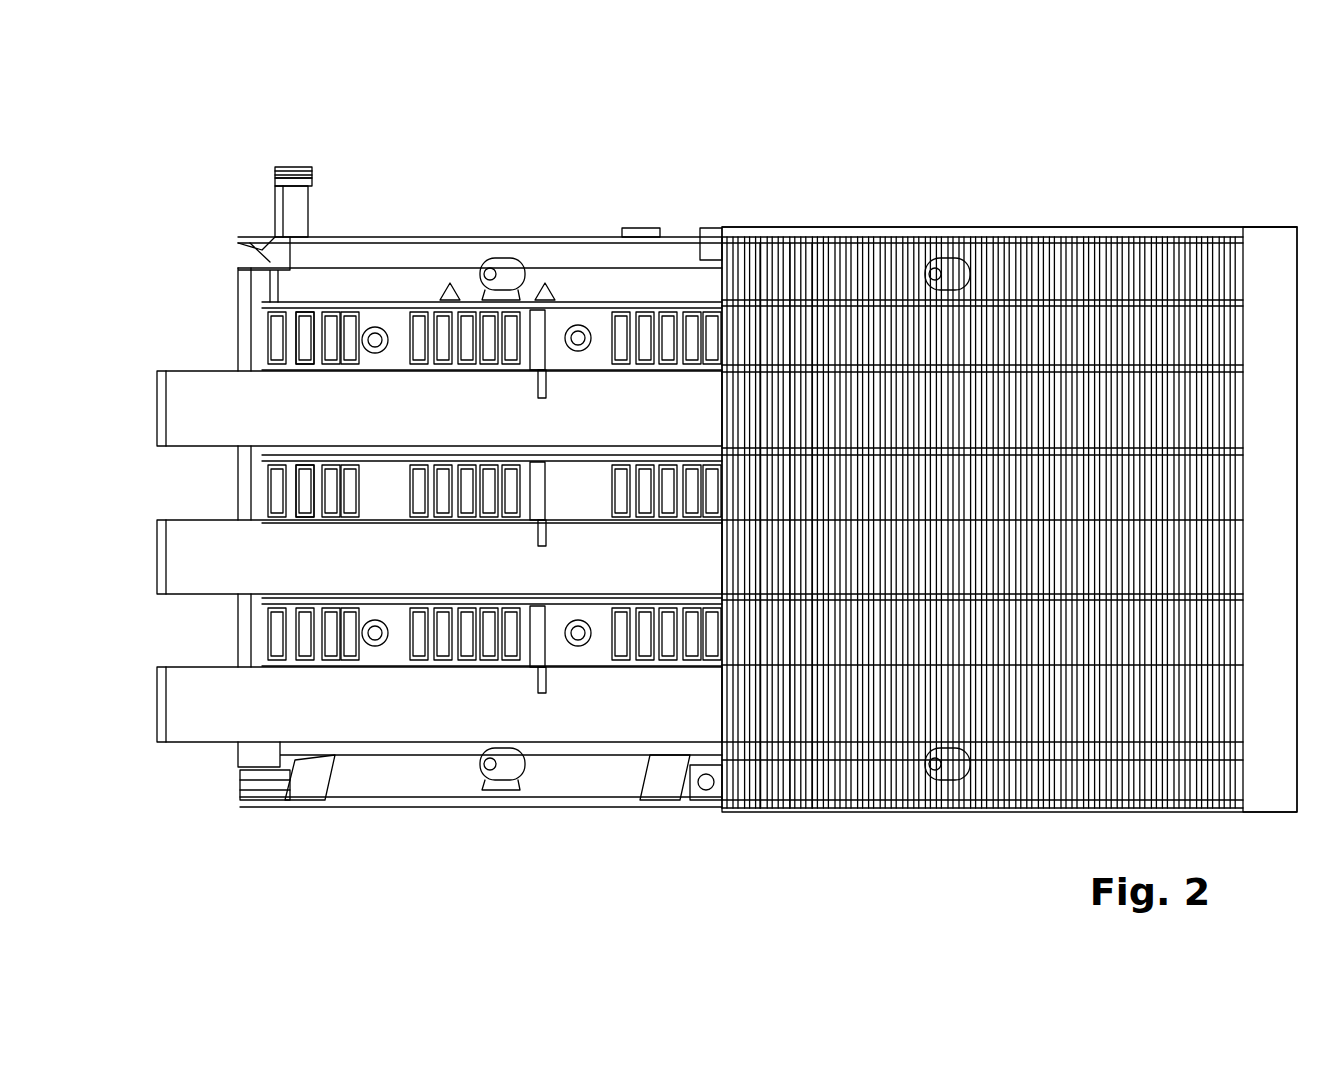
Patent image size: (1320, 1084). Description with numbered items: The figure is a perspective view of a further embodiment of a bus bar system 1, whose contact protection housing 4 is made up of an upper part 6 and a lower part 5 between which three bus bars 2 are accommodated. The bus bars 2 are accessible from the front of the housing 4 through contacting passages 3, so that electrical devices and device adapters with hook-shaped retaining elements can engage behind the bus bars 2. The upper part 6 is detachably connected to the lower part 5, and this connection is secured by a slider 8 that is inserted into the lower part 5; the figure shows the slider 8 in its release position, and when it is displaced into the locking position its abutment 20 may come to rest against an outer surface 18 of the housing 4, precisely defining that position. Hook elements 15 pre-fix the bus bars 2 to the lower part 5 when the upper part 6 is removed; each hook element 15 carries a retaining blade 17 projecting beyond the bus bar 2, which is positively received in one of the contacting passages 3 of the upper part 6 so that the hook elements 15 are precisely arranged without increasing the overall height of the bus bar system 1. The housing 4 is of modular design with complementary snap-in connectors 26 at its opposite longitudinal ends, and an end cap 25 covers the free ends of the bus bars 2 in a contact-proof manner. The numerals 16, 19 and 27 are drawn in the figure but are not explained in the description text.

The bus bar system 1 is at (978, 152).
The bus bar 2 is at (172, 410).
The contacting passage 3 is at (760, 285).
The contact protection housing 4 is at (809, 832).
The lower part 5 is at (430, 782).
The upper part 6 is at (882, 250).
The slider 8 is at (300, 202).
The hook element 15 is at (540, 335).
The cell holder 16 is at (432, 330).
The retaining blade 17 is at (532, 390).
The outer surface 18 is at (550, 228).
The terminal cap 19 is at (305, 165).
The abutment 20 is at (275, 185).
The end cap 25 is at (1270, 790).
The snap-in connector 26 is at (252, 246).
The separating web 27 is at (305, 375).